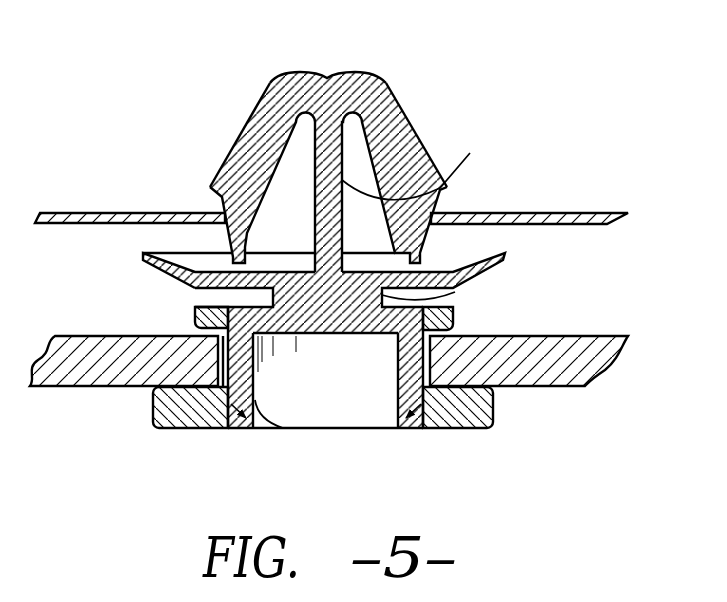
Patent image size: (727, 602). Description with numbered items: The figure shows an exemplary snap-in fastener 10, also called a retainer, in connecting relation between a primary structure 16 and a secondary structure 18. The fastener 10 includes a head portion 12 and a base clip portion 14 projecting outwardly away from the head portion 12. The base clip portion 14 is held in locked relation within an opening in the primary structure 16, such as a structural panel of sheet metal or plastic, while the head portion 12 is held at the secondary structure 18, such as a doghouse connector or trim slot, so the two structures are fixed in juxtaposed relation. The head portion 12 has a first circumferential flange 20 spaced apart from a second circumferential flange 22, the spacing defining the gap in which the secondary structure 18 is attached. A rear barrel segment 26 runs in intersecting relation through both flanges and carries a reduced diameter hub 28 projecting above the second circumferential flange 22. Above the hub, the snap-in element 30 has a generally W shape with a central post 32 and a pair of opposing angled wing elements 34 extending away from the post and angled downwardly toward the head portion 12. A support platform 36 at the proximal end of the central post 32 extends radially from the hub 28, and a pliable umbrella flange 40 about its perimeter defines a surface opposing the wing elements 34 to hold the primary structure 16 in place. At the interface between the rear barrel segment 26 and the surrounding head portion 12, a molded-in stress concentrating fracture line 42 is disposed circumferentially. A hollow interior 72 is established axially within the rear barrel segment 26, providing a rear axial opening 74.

The snap-in fastener 10 is at (166, 80).
The head portion 12 is at (175, 436).
The base clip portion 14 is at (240, 123).
The primary structure 16 is at (533, 215).
The secondary structure 18 is at (590, 336).
The first circumferential flange 20 is at (453, 433).
The second circumferential flange 22 is at (455, 323).
The rear barrel segment 26 is at (280, 428).
The reduced diameter hub 28 is at (458, 292).
The snap-in element 30 is at (390, 88).
The central post 32 is at (422, 163).
The wing elements 34 is at (219, 172).
The support platform 36 is at (193, 291).
The umbrella flange 40 is at (143, 256).
The stress concentrating fracture line 42 is at (248, 433).
The hollow interior 72 is at (345, 397).
The rear axial opening 74 is at (343, 432).